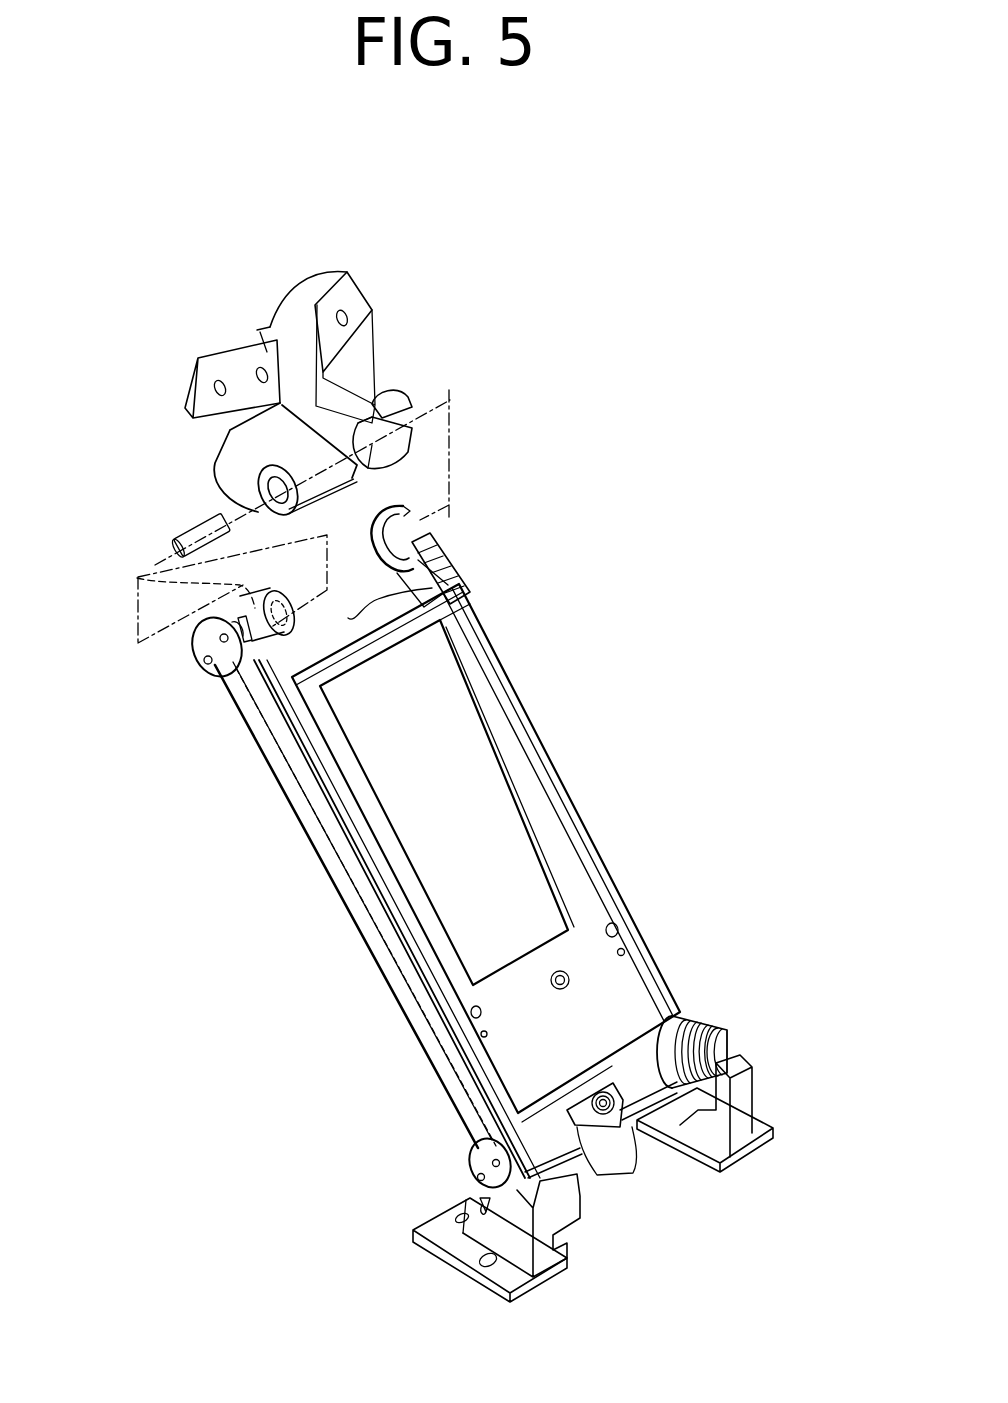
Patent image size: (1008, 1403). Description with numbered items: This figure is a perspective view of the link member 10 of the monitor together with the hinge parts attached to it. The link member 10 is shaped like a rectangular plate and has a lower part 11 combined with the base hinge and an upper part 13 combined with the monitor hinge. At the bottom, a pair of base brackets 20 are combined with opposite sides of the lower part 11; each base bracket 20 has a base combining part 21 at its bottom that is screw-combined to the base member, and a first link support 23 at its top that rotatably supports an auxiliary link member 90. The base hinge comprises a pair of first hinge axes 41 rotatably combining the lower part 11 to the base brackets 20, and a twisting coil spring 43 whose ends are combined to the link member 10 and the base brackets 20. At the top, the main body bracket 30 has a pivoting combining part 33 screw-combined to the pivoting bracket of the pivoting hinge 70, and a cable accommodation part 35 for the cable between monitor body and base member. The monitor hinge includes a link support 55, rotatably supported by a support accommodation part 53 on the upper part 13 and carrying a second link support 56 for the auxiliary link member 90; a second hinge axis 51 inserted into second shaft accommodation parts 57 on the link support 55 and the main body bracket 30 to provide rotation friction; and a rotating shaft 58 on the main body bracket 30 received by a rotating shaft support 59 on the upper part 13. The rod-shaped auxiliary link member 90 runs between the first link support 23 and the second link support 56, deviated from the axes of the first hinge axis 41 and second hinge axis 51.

The link member 10 is at (538, 734).
The lower part 11 is at (648, 1145).
The upper part 13 is at (298, 654).
The base bracket 20 is at (545, 1224).
The base combining part 21 is at (760, 1120).
The first link support 23 is at (484, 1192).
The main body bracket 30 is at (432, 236).
The pivoting combining part 33 is at (257, 330).
The cable accommodation part 35 is at (330, 412).
The first hinge axis 41 is at (604, 1122).
The twisting coil spring 43 is at (700, 1050).
The second hinge axis 51 is at (188, 535).
The support accommodation part 53 is at (246, 614).
The link support 55 is at (234, 676).
The second link support 56 is at (232, 652).
The second shaft accommodation part 57 is at (262, 492).
The rotating shaft 58 is at (398, 396).
The rotating shaft support 59 is at (400, 518).
The pivoting hinge 70 is at (713, 320).
The auxiliary link member 90 is at (365, 885).